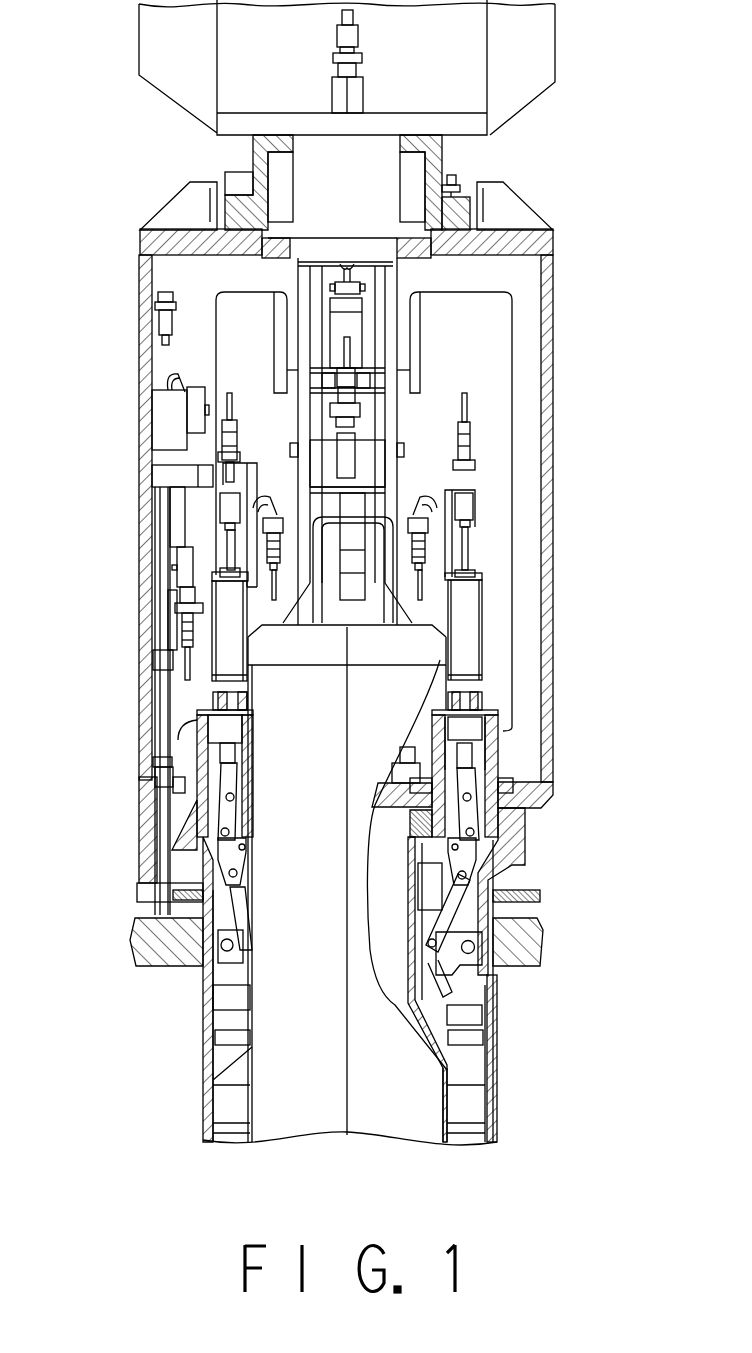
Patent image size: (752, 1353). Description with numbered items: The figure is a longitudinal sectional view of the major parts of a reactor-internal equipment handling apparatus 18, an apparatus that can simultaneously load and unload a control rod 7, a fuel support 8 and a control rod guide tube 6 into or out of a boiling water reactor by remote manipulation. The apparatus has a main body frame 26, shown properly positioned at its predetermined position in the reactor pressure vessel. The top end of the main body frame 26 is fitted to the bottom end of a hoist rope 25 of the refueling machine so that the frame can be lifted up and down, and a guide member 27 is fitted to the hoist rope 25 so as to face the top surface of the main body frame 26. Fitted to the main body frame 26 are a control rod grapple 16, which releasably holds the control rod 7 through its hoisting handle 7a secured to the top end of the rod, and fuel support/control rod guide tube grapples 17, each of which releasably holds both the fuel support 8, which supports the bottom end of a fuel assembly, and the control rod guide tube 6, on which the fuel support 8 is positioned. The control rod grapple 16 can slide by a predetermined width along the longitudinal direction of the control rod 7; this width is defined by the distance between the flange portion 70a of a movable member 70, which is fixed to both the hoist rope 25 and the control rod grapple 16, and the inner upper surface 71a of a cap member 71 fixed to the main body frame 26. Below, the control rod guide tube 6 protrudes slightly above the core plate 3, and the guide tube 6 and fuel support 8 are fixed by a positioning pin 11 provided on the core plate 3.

The core plate 3 is at (540, 938).
The control rod guide tube 6 is at (535, 893).
The control rod 7 is at (318, 958).
The hoisting handle 7a is at (327, 520).
The fuel support 8 is at (522, 846).
The positioning pin 11 is at (167, 867).
The control rod grapple 16 is at (367, 453).
The fuel support/control rod guide tube grapple 17 is at (228, 632).
The reactor-internal equipment handling apparatus 18 is at (130, 367).
The hoist rope 25 is at (340, 10).
The main body frame 26 is at (553, 240).
The guide member 27 is at (520, 64).
The movable member 70 is at (411, 177).
The flange portion 70a is at (400, 215).
The cap member 71 is at (239, 164).
The inner upper surface 71a is at (293, 150).